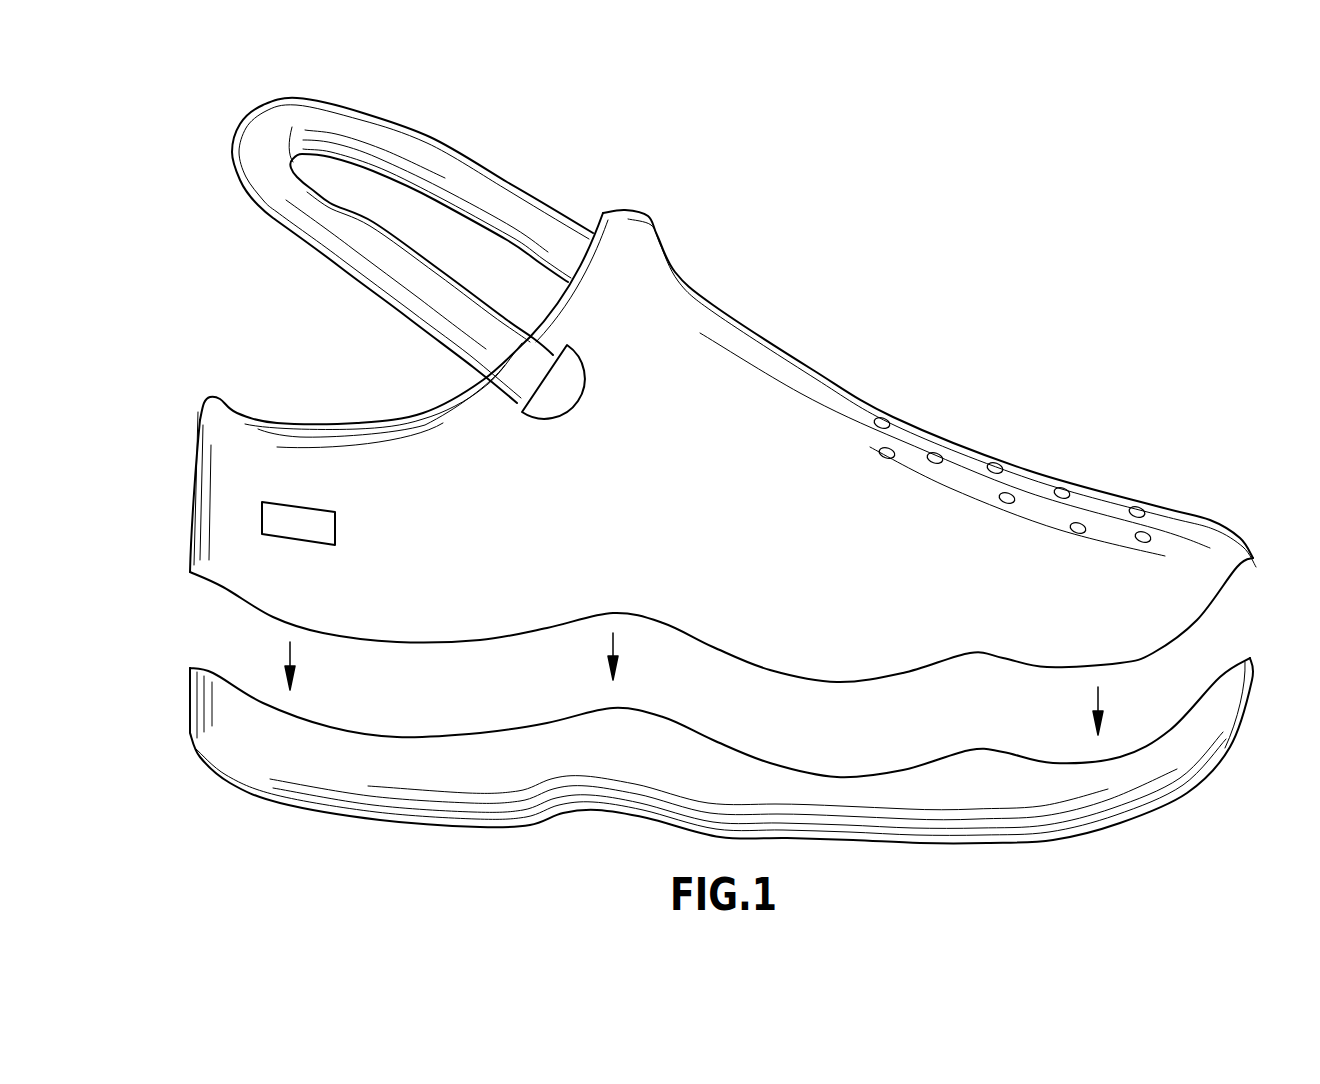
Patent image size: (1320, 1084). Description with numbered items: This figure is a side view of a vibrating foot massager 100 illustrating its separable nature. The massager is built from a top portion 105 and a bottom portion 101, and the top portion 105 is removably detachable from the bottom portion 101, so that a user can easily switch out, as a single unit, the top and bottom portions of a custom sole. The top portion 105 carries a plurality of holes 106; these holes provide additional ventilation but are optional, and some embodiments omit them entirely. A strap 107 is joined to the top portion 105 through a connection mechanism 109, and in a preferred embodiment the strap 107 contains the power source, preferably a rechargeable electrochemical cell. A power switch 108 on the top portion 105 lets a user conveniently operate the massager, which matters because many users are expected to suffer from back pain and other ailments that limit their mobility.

The vibrating foot massager 100 is at (1255, 282).
The bottom portion 101 is at (1238, 727).
The top portion 105 is at (1188, 510).
The plurality of holes 106 is at (940, 445).
The strap 107 is at (508, 178).
The power switch 108 is at (272, 498).
The connection mechanism 109 is at (555, 428).